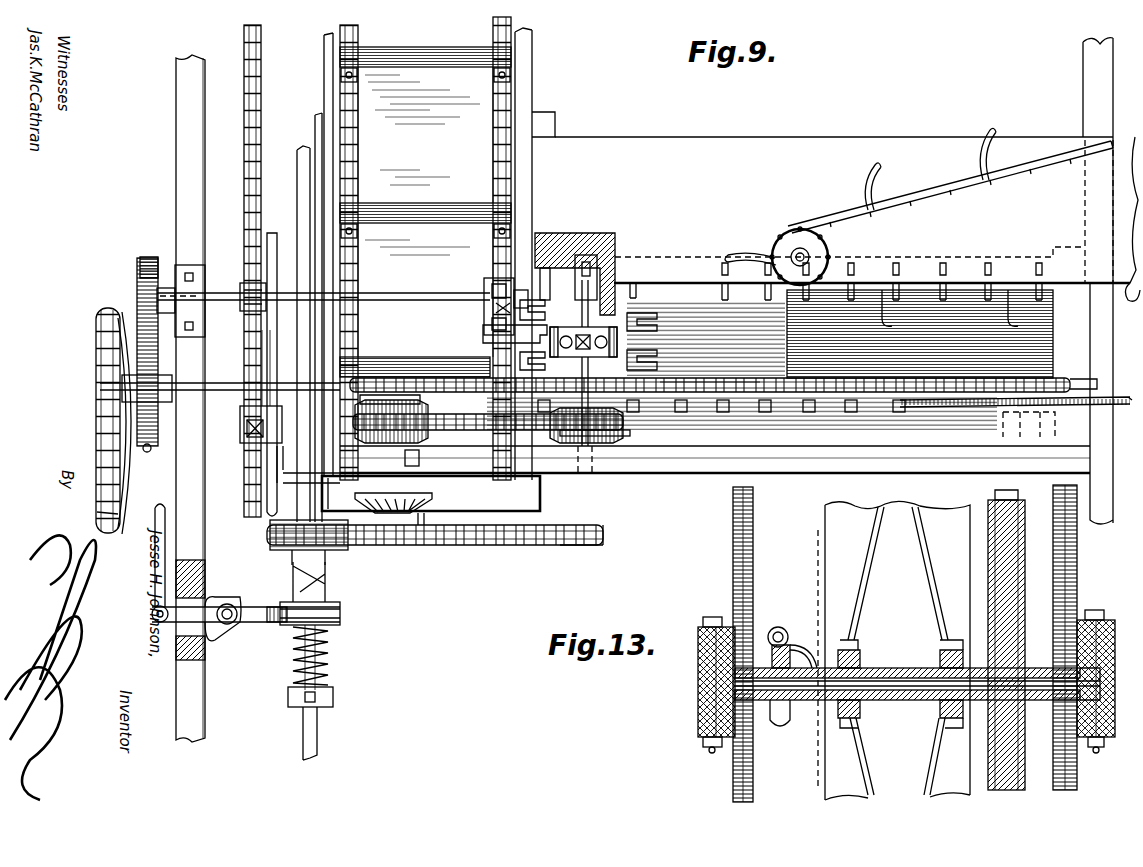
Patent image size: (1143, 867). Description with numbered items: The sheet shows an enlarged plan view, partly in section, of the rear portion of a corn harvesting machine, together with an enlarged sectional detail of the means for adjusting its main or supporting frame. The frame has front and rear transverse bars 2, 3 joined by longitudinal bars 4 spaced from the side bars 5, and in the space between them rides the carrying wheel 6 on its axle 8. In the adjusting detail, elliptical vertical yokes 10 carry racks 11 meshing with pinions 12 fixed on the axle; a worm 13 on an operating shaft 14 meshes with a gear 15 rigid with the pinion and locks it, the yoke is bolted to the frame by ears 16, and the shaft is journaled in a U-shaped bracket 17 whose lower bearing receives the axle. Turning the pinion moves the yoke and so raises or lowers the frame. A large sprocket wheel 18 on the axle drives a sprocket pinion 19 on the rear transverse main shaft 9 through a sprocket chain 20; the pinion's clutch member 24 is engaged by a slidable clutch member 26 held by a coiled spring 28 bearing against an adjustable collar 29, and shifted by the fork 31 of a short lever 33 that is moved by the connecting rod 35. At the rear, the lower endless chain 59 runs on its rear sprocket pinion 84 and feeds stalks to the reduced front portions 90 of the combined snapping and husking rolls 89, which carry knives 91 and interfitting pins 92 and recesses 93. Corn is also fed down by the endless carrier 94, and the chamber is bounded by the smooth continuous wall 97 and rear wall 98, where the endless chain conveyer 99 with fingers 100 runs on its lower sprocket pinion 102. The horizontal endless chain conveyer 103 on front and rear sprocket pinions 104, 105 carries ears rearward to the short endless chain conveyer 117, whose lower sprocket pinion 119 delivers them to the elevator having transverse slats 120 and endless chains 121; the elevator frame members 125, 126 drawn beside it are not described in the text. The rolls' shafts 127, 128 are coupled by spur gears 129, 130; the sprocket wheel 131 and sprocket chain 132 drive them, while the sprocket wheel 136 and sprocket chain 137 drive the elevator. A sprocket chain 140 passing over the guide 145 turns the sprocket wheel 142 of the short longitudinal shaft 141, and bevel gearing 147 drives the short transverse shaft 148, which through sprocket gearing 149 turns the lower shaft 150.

In FIG. 9, the front transverse bar 2 is at (1090, 114).
In FIG. 9, the rear transverse bar 3 is at (176, 152).
In FIG. 9, the longitudinal bar 4 is at (715, 459).
In FIG. 13, the longitudinal bar 4 is at (1115, 686).
In FIG. 13, the side bar 5 is at (698, 688).
In FIG. 13, the carrying wheel 6 is at (843, 520).
In FIG. 13, the axle 8 is at (898, 700).
In FIG. 9, the rear transverse main shaft 9 is at (305, 206).
In FIG. 13, the vertical yoke 10 is at (735, 526).
In FIG. 13, the rack 11 is at (753, 580).
In FIG. 13, the pinion 12 is at (756, 740).
In FIG. 13, the worm 13 is at (784, 628).
In FIG. 13, the operating shaft 14 is at (812, 535).
In FIG. 13, the gear 15 is at (792, 722).
In FIG. 13, the ear 16 is at (1110, 758).
In FIG. 13, the U-shaped bracket 17 is at (804, 641).
In FIG. 13, the large sprocket wheel 18 is at (1025, 594).
In FIG. 9, the sprocket pinion 19 is at (340, 550).
In FIG. 9, the sprocket chain 20 is at (512, 545).
In FIG. 9, the clutch member 24 is at (290, 564).
In FIG. 9, the slidable clutch member 26 is at (325, 594).
In FIG. 9, the coiled spring 28 is at (328, 660).
In FIG. 9, the adjustable collar 29 is at (333, 697).
In FIG. 9, the fork 31 is at (340, 614).
In FIG. 9, the short lever 33 is at (200, 608).
In FIG. 9, the connecting rod 35 is at (165, 512).
In FIG. 9, the lower endless chain 59 is at (937, 192).
In FIG. 9, the rear sprocket pinion 84 is at (790, 238).
In FIG. 9, the combined snapping and husking rolls 89 is at (706, 334).
In FIG. 9, the reduced front portion 90 is at (1036, 288).
In FIG. 9, the knife 91 is at (1046, 352).
In FIG. 9, the pin 92 is at (968, 290).
In FIG. 9, the recess 93 is at (633, 412).
In FIG. 9, the endless carrier 94 is at (311, 246).
In FIG. 9, the smooth continuous wall 97 is at (1039, 426).
In FIG. 9, the rear wall 98 is at (614, 284).
In FIG. 9, the endless chain conveyer 99 is at (583, 376).
In FIG. 9, the finger 100 is at (650, 322).
In FIG. 9, the lower sprocket pinion 102 is at (558, 268).
In FIG. 9, the horizontal endless chain conveyer 103 is at (702, 388).
In FIG. 9, the front sprocket pinion 104 is at (998, 406).
In FIG. 9, the rear sprocket pinion 105 is at (368, 378).
In FIG. 9, the short endless chain conveyer 117 is at (483, 334).
In FIG. 9, the lower sprocket pinion 119 is at (484, 278).
In FIG. 9, the transverse slat 120 is at (441, 62).
In FIG. 9, the endless chain 121 is at (358, 154).
In FIG. 9, the bar 125 is at (322, 134).
In FIG. 9, the frame 126 is at (545, 500).
In FIG. 9, the roll shaft 127 is at (283, 368).
In FIG. 9, the roll shaft 128 is at (137, 300).
In FIG. 9, the spur gear 129 is at (147, 450).
In FIG. 9, the spur gear 130 is at (150, 258).
In FIG. 9, the sprocket wheel 131 is at (96, 420).
In FIG. 9, the sprocket chain 132 is at (97, 512).
In FIG. 9, the sprocket wheel 136 is at (246, 380).
In FIG. 9, the sprocket chain 137 is at (262, 108).
In FIG. 9, the sprocket chain 140 is at (277, 260).
In FIG. 9, the short longitudinal shaft 141 is at (216, 298).
In FIG. 9, the sprocket wheel 142 is at (246, 262).
In FIG. 9, the guide 145 is at (308, 464).
In FIG. 9, the bevel gearing 147 is at (420, 525).
In FIG. 9, the short transverse shaft 148 is at (420, 492).
In FIG. 9, the sprocket gearing 149 is at (478, 446).
In FIG. 9, the lower shaft 150 is at (586, 400).